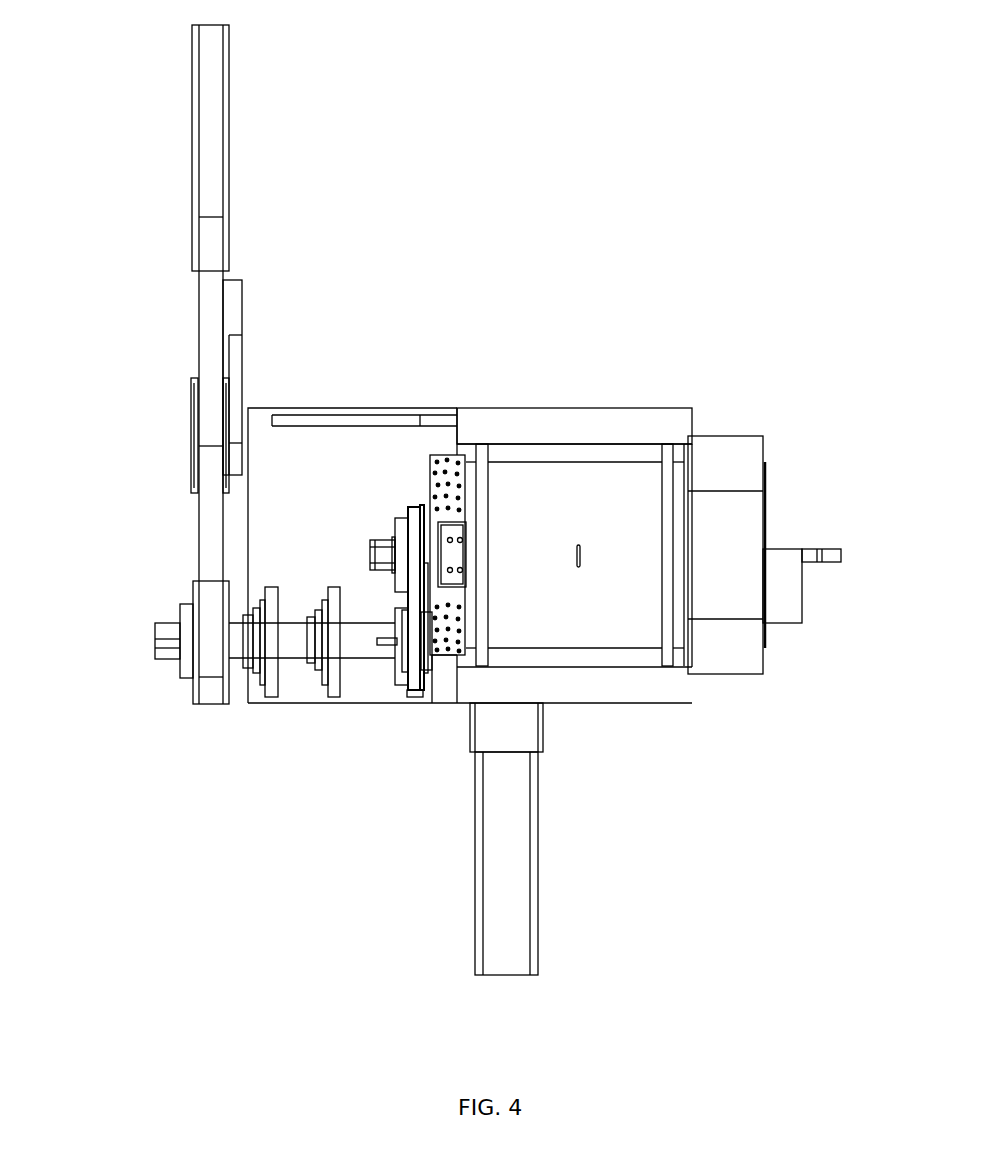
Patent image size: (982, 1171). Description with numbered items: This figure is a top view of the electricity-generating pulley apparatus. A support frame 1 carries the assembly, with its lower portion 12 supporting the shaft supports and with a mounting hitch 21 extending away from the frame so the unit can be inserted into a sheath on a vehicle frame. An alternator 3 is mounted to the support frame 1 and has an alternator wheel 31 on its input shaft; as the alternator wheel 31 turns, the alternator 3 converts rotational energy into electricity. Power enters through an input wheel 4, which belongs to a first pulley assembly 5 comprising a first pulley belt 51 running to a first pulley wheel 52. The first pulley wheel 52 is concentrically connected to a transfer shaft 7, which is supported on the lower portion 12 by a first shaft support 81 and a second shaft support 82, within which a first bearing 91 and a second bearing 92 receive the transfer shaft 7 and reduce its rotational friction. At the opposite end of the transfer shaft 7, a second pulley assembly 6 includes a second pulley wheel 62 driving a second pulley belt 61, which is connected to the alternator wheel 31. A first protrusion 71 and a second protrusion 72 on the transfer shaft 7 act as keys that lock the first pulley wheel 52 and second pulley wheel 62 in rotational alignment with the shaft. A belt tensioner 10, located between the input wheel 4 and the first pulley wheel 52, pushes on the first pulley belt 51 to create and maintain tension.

The support frame 1 is at (664, 398).
The alternator 3 is at (616, 475).
The input wheel 4 is at (229, 122).
The first pulley assembly 5 is at (162, 348).
The second pulley assembly 6 is at (380, 586).
The transfer shaft 7 is at (352, 640).
The belt tensioner 10 is at (233, 321).
The lower portion 12 is at (261, 437).
The mounting hitch 21 is at (517, 893).
The alternator wheel 31 is at (408, 506).
The first pulley belt 51 is at (213, 513).
The first pulley wheel 52 is at (197, 685).
The second pulley belt 61 is at (417, 588).
The second pulley wheel 62 is at (424, 692).
The first protrusion 71 is at (168, 641).
The second protrusion 72 is at (390, 641).
The first shaft support 81 is at (282, 691).
The second shaft support 82 is at (335, 688).
The first bearing 91 is at (256, 668).
The second bearing 92 is at (326, 666).